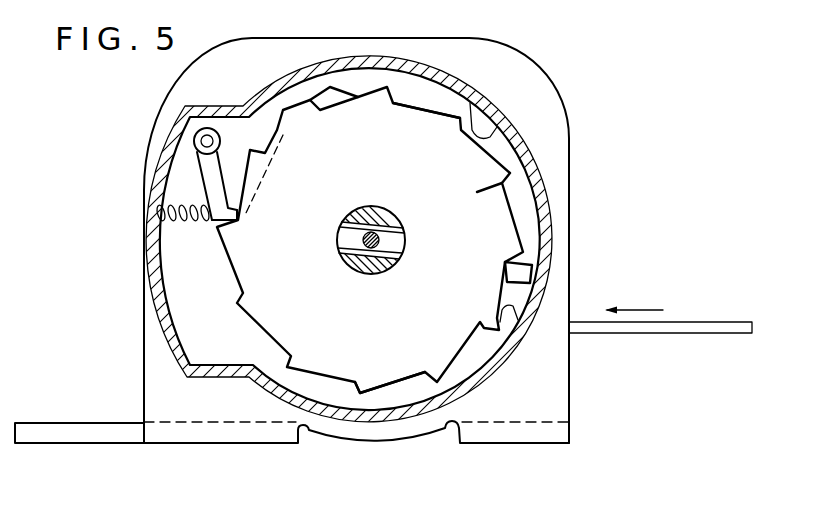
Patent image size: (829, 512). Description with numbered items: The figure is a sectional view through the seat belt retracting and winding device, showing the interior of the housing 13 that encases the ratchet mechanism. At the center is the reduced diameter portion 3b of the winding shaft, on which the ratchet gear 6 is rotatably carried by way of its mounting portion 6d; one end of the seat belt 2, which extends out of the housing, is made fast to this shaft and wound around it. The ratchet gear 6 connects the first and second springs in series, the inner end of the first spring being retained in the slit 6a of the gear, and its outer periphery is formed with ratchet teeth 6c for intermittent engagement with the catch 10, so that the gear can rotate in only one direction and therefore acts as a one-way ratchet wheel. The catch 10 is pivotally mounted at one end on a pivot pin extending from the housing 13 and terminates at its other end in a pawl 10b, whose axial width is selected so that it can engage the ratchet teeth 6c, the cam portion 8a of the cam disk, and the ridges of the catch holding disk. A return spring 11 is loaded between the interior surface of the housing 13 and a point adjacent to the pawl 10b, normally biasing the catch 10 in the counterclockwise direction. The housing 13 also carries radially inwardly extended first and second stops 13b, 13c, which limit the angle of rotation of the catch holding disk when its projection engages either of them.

The seat belt 2 is at (675, 326).
The reduced diameter portion 3b is at (403, 257).
The ratchet gear 6 is at (512, 174).
The slit 6a is at (402, 224).
The ratchet teeth 6c is at (368, 384).
The mounting portion 6d is at (404, 239).
The cam portion 8a is at (418, 92).
The catch 10 is at (207, 172).
The pawl 10b is at (217, 233).
The return spring 11 is at (162, 222).
The housing 13 is at (551, 200).
The first stop 13b is at (484, 131).
The second stop 13c is at (507, 330).